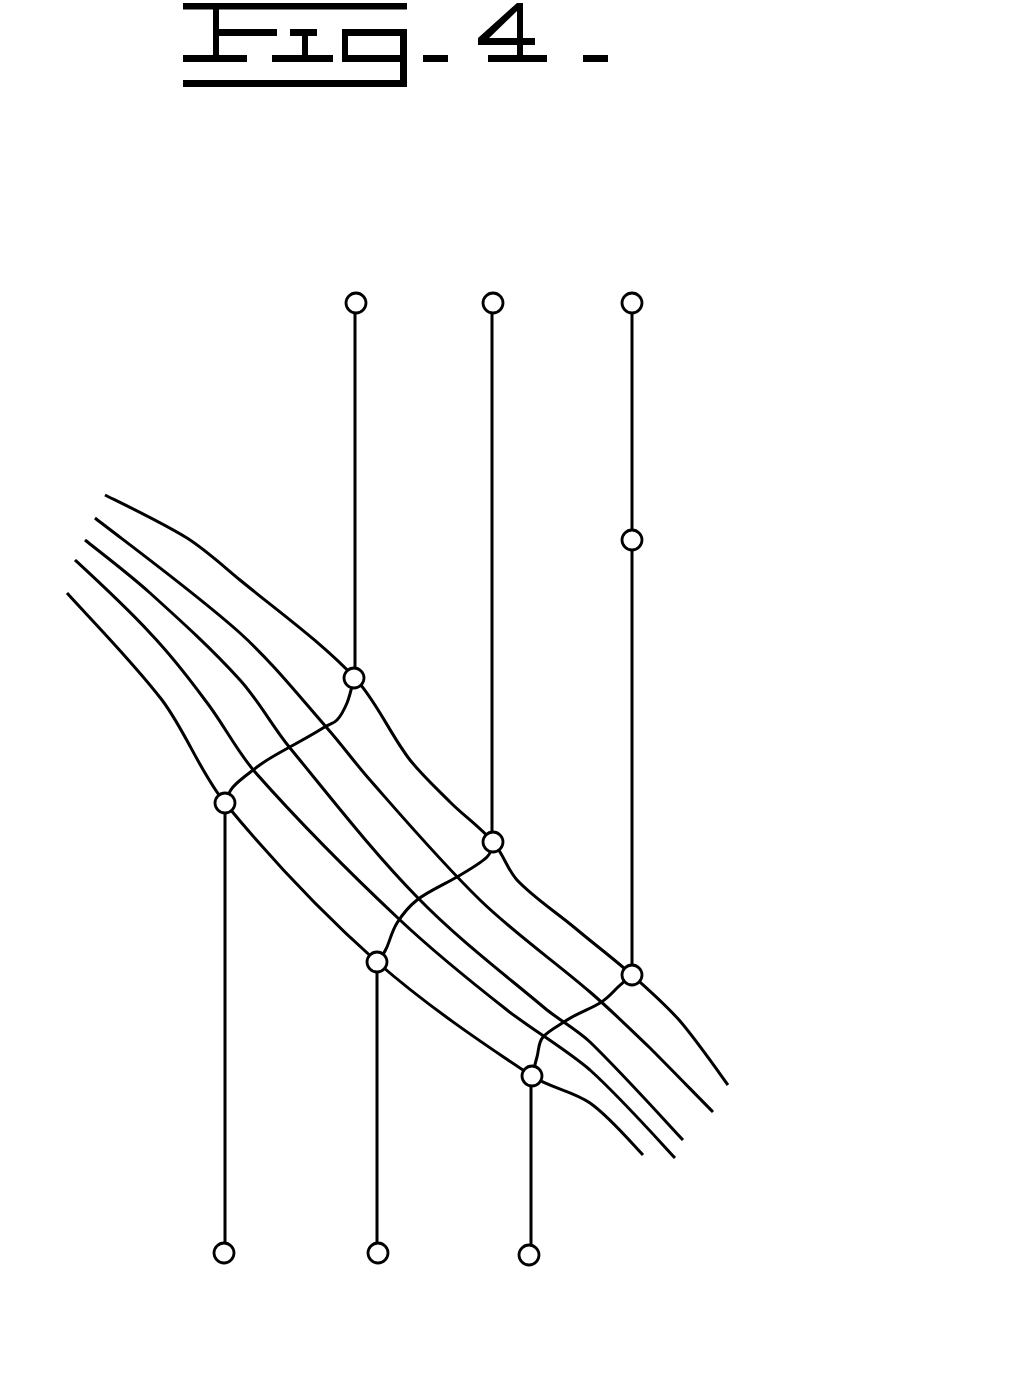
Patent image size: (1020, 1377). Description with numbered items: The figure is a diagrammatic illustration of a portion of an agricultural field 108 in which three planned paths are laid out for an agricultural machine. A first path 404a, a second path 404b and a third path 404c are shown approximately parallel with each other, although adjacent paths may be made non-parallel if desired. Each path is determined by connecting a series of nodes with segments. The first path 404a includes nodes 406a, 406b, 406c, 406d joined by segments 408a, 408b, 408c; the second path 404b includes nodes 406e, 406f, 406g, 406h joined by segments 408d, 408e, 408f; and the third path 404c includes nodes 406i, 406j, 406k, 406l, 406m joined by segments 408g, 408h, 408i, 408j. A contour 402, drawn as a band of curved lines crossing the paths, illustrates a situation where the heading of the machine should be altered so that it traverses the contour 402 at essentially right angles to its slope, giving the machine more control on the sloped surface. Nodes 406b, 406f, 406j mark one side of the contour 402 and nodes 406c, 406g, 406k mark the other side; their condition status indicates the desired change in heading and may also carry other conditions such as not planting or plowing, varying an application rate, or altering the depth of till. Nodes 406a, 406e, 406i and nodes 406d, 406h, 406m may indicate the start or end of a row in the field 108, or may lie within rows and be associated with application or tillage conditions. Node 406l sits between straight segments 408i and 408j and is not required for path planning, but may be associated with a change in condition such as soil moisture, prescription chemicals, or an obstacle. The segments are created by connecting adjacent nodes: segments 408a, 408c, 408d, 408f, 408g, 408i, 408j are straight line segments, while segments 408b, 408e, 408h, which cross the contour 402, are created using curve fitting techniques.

The agricultural field 108 is at (745, 447).
The contour 402 is at (187, 538).
The first path 404a is at (333, 281).
The second path 404b is at (454, 281).
The third path 404c is at (607, 281).
The node 406a is at (224, 1253).
The node 406b is at (225, 803).
The node 406c is at (354, 678).
The node 406d is at (356, 303).
The node 406e is at (378, 1253).
The node 406f is at (377, 962).
The node 406g is at (493, 842).
The node 406h is at (493, 303).
The node 406i is at (529, 1255).
The node 406j is at (532, 1076).
The node 406k is at (632, 975).
The node 406l is at (622, 540).
The node 406m is at (632, 303).
The segment 408a is at (225, 1082).
The segment 408b is at (237, 777).
The segment 408c is at (355, 440).
The segment 408d is at (377, 1120).
The segment 408e is at (392, 940).
The segment 408f is at (492, 540).
The segment 408g is at (531, 1172).
The segment 408h is at (547, 1029).
The segment 408i is at (632, 772).
The segment 408j is at (632, 460).